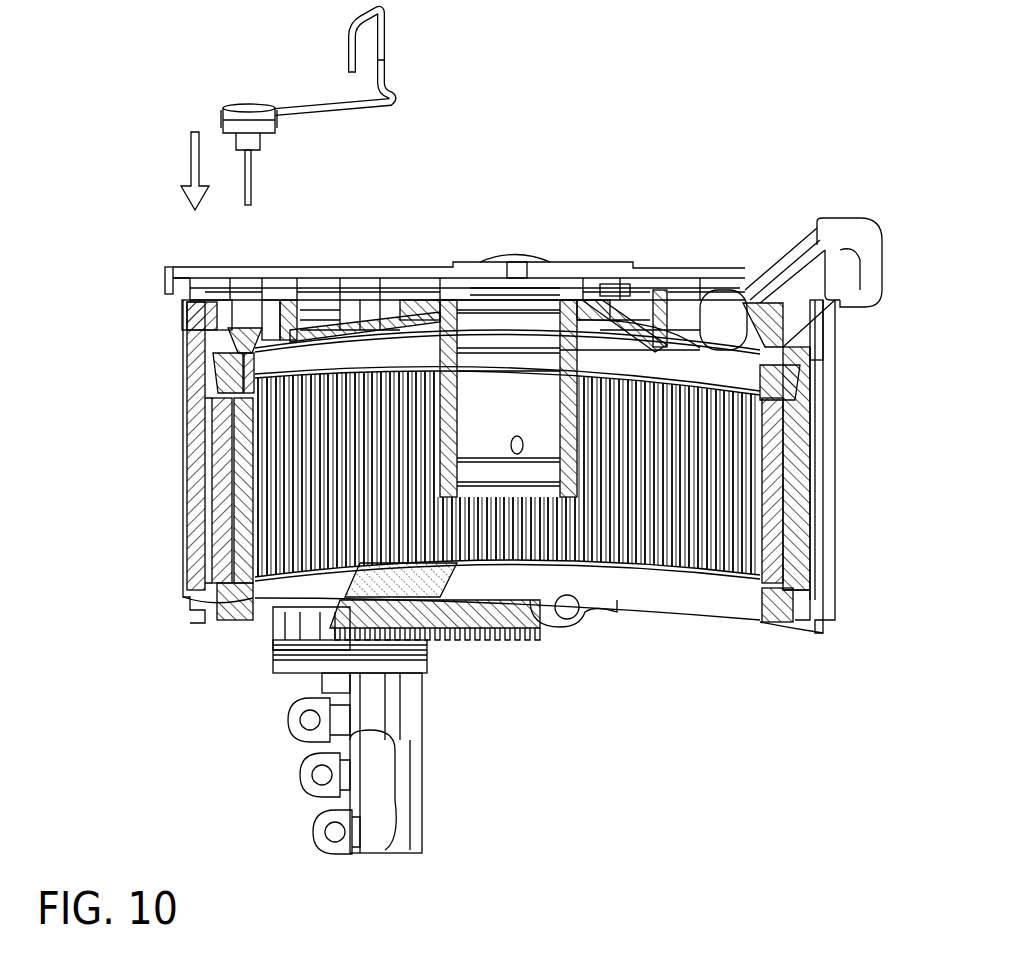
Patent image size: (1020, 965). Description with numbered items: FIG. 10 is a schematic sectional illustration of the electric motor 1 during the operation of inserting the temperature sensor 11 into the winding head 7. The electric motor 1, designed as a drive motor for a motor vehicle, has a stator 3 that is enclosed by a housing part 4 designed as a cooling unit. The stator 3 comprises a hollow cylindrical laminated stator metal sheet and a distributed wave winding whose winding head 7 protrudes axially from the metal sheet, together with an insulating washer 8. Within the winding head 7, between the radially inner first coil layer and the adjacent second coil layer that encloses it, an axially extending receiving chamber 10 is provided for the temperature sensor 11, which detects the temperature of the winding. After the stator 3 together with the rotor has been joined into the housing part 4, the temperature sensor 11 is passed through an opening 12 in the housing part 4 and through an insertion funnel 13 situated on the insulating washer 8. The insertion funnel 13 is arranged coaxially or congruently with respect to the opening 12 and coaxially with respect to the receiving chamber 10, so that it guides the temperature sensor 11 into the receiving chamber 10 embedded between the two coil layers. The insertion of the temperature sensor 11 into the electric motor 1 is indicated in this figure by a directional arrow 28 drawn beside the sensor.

The electric motor 1 is at (703, 178).
The stator 3 is at (800, 490).
The housing part 4 is at (821, 348).
The winding head 7 is at (786, 383).
The insulating washer 8 is at (208, 362).
The receiving chamber 10 is at (246, 378).
The temperature sensor 11 is at (252, 175).
The opening 12 is at (246, 308).
The insertion funnel 13 is at (246, 336).
The directional arrow 28 is at (195, 163).